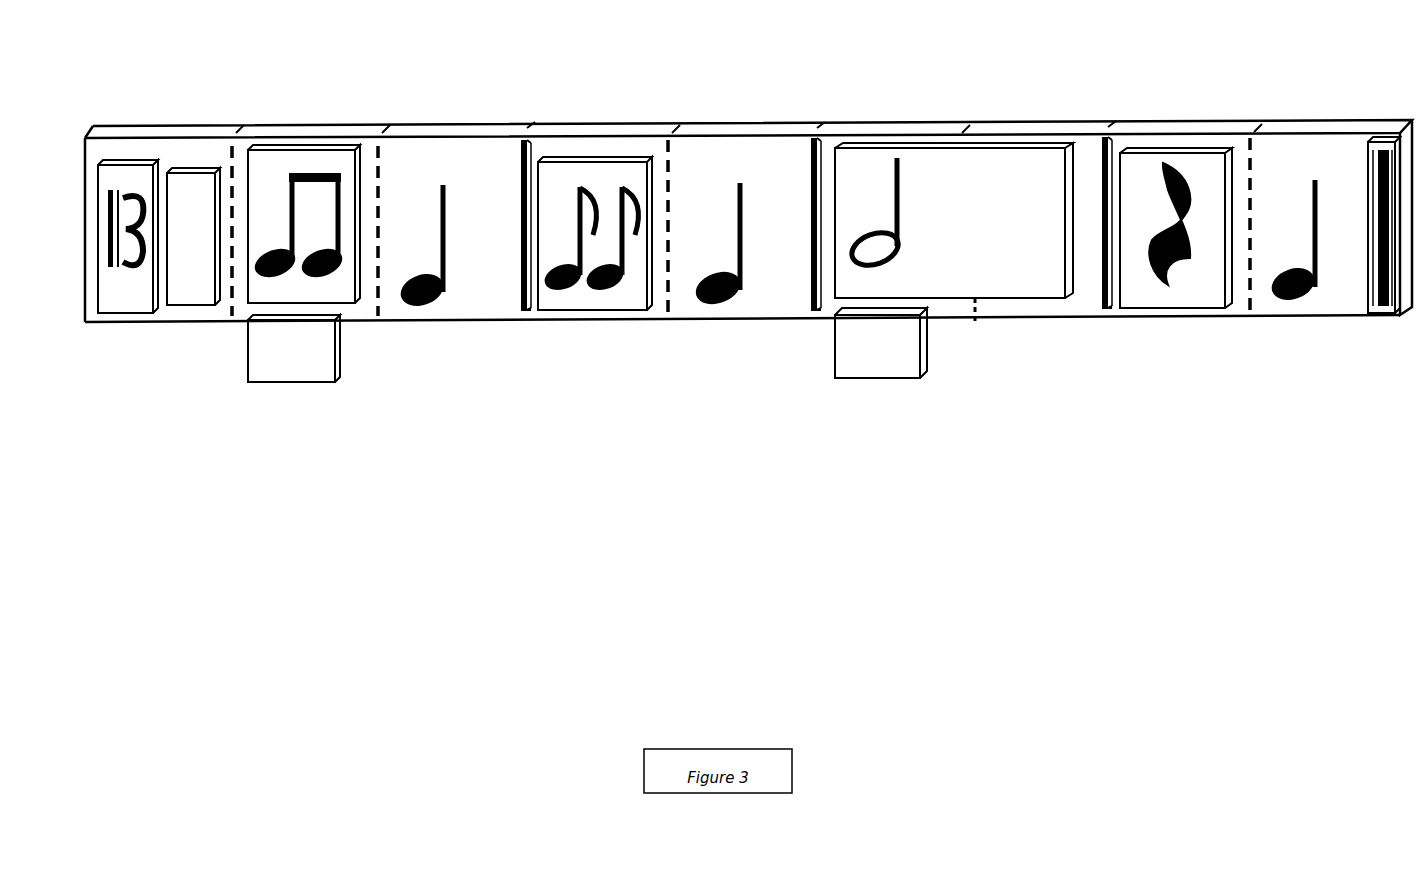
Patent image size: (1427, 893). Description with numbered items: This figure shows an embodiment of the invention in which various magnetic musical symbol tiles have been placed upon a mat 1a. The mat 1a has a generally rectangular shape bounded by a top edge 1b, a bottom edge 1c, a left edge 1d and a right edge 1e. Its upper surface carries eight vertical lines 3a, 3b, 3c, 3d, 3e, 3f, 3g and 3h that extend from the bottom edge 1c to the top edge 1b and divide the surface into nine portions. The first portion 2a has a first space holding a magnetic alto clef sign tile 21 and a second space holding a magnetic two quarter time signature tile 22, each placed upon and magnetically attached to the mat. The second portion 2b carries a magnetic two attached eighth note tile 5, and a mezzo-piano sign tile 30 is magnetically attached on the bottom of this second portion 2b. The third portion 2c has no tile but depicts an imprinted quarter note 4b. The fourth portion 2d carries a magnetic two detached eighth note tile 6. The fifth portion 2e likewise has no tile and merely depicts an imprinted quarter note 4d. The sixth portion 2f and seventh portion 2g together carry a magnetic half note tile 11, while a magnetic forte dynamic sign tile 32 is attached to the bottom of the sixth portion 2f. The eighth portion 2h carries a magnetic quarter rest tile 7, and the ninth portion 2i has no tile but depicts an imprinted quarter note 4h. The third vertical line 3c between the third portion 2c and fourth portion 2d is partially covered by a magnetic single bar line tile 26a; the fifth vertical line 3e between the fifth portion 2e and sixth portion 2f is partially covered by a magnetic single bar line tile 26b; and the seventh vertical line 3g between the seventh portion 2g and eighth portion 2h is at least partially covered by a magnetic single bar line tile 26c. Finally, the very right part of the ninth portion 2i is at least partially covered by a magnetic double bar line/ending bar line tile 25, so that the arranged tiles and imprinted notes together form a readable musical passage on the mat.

The mat 1a is at (108, 136).
The top edge 1b is at (122, 136).
The bottom edge 1c is at (666, 324).
The left edge 1d is at (88, 249).
The right edge 1e is at (1404, 168).
The first portion 2a is at (134, 228).
The second portion 2b is at (306, 226).
The third portion 2c is at (437, 225).
The fourth portion 2d is at (595, 223).
The fifth portion 2e is at (732, 225).
The sixth portion 2f is at (952, 223).
The seventh portion 2g is at (1090, 151).
The eighth portion 2h is at (1176, 220).
The ninth portion 2i is at (1299, 219).
The first vertical line 3a is at (235, 149).
The second vertical line 3b is at (383, 172).
The third vertical line 3c is at (523, 318).
The fourth vertical line 3d is at (672, 172).
The fifth vertical line 3e is at (808, 317).
The sixth vertical line 3f is at (960, 135).
The seventh vertical line 3g is at (1102, 307).
The eighth vertical line 3h is at (1254, 172).
The imprinted quarter note 4b is at (438, 304).
The imprinted quarter note 4d is at (735, 302).
The imprinted quarter note 4h is at (1313, 294).
The magnetic two attached eighth note tile 5 is at (338, 285).
The magnetic two detached eighth note tile 6 is at (617, 298).
The magnetic quarter rest tile 7 is at (1188, 285).
The magnetic half note tile 11 is at (968, 268).
The magnetic alto clef sign tile 21 is at (120, 290).
The magnetic two quarter time signature tile 22 is at (188, 288).
The magnetic double bar line/ending bar line tile 25 is at (1368, 270).
The magnetic single bar line tile 26a is at (519, 168).
The magnetic single bar line tile 26b is at (810, 170).
The magnetic single bar line tile 26c is at (1112, 152).
The mezzo-piano sign tile 30 is at (283, 365).
The magnetic forte dynamic sign tile 32 is at (886, 360).